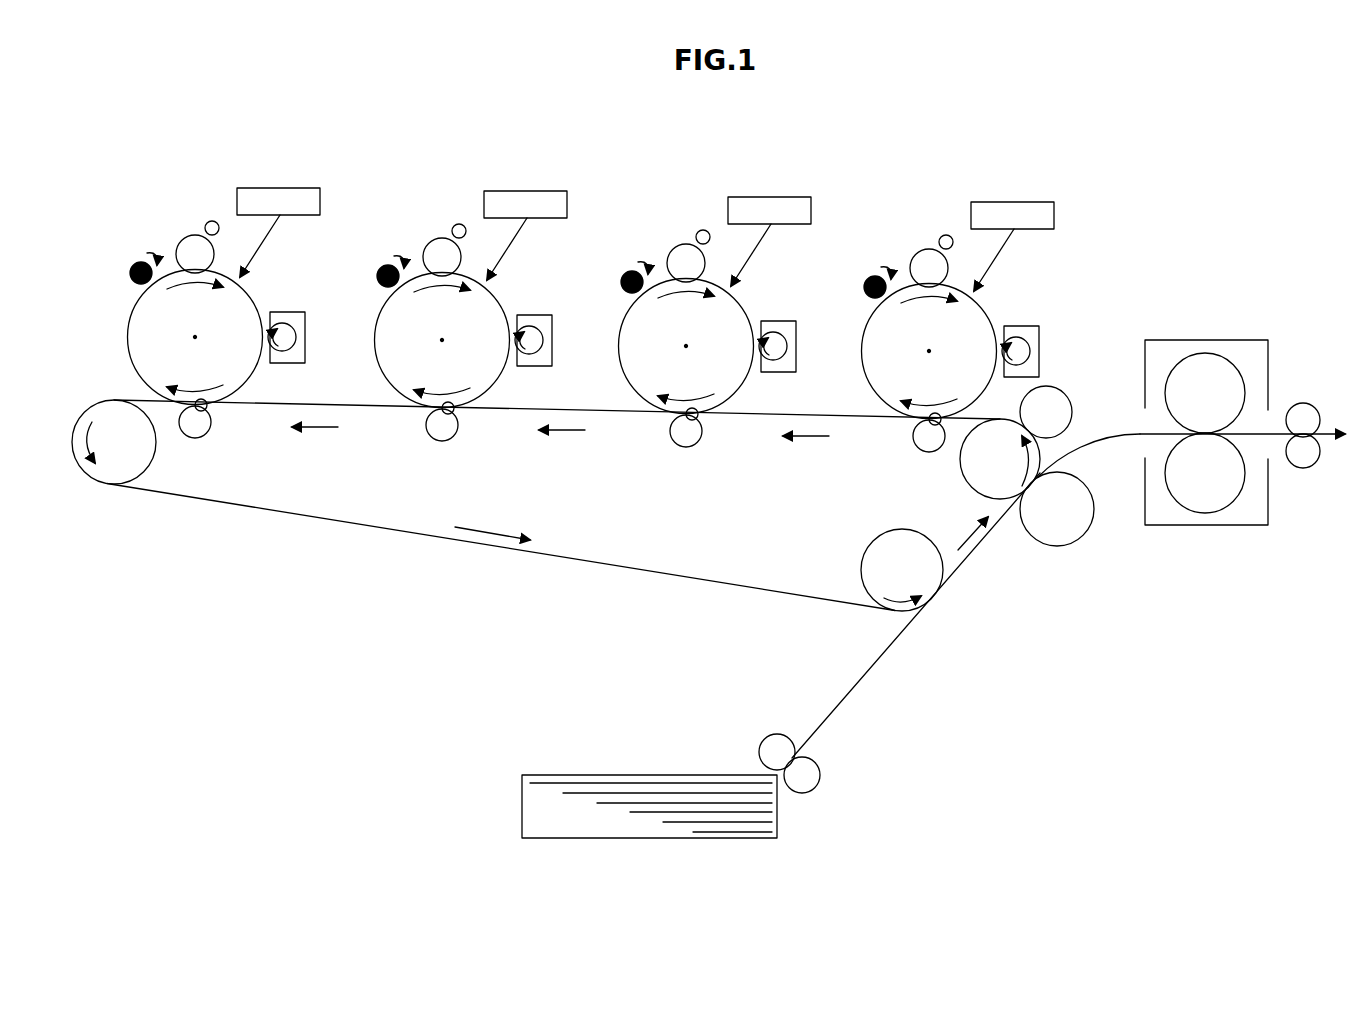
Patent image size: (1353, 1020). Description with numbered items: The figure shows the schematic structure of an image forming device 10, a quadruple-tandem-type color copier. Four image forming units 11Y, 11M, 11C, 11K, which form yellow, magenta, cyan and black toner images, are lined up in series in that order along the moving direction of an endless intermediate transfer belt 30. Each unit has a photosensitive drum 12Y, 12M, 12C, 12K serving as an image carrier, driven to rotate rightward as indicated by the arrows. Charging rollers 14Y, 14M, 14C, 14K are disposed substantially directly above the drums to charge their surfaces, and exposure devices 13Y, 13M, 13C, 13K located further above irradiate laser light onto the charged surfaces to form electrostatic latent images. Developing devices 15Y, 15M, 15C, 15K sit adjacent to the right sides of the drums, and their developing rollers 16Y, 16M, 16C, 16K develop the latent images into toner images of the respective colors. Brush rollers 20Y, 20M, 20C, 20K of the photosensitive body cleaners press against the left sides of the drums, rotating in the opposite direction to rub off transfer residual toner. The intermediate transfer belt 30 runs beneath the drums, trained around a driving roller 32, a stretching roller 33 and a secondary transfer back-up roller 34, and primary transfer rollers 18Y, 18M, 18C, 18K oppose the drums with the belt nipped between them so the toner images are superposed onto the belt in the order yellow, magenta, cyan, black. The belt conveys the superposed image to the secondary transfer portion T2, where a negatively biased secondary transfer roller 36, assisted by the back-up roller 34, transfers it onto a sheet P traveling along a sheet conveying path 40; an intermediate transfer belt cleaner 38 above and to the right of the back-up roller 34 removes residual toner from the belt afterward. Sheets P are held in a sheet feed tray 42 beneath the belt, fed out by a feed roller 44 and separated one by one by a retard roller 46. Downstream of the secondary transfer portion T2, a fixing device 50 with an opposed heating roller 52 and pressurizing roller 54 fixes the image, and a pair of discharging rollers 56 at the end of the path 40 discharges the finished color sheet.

The image forming device 10 is at (930, 142).
The image forming unit 11K is at (232, 283).
The image forming unit 11C is at (477, 286).
The image forming unit 11M is at (721, 292).
The image forming unit 11Y is at (980, 297).
The photosensitive drum 12K is at (196, 313).
The photosensitive drum 12C is at (443, 316).
The photosensitive drum 12M is at (688, 322).
The photosensitive drum 12Y is at (929, 327).
The exposure device 13K is at (278, 170).
The exposure device 13C is at (525, 173).
The exposure device 13M is at (769, 179).
The exposure device 13Y is at (1012, 184).
The charging roller 14K is at (199, 217).
The charging roller 14C is at (444, 220).
The charging roller 14M is at (688, 226).
The charging roller 14Y is at (932, 231).
The developing device 15K is at (297, 297).
The developing device 15C is at (544, 300).
The developing device 15M is at (789, 306).
The developing device 15Y is at (1030, 311).
The developing roller 16K is at (288, 365).
The developing roller 16C is at (533, 368).
The developing roller 16M is at (777, 374).
The developing roller 16Y is at (1056, 346).
The primary transfer roller 18K is at (196, 444).
The primary transfer roller 18C is at (441, 447).
The primary transfer roller 18M is at (685, 453).
The primary transfer roller 18Y is at (929, 458).
The brush roller 20K is at (141, 241).
The brush roller 20C is at (386, 244).
The brush roller 20M is at (630, 250).
The brush roller 20Y is at (874, 255).
The secondary transfer portion T2 is at (1057, 466).
The intermediate transfer belt 30 is at (375, 408).
The driving roller 32 is at (115, 483).
The stretching roller 33 is at (862, 573).
The secondary transfer back-up roller 34 is at (975, 486).
The secondary transfer roller 36 is at (1056, 547).
The intermediate transfer belt cleaner 38 is at (1070, 395).
The sheet conveying path 40 is at (873, 667).
The sheet feed tray 42 is at (565, 838).
The feed roller 44 is at (770, 735).
The retard roller 46 is at (815, 788).
The fixing device 50 is at (1205, 340).
The heating roller 52 is at (1235, 365).
The pressurizing roller 54 is at (1233, 503).
The discharging rollers 56 is at (1316, 412).
The sheet P is at (702, 778).